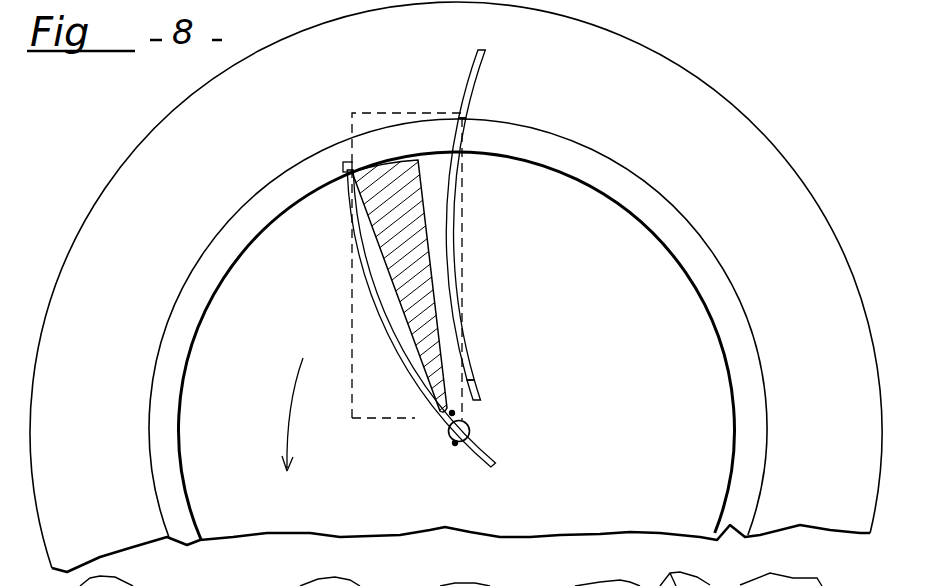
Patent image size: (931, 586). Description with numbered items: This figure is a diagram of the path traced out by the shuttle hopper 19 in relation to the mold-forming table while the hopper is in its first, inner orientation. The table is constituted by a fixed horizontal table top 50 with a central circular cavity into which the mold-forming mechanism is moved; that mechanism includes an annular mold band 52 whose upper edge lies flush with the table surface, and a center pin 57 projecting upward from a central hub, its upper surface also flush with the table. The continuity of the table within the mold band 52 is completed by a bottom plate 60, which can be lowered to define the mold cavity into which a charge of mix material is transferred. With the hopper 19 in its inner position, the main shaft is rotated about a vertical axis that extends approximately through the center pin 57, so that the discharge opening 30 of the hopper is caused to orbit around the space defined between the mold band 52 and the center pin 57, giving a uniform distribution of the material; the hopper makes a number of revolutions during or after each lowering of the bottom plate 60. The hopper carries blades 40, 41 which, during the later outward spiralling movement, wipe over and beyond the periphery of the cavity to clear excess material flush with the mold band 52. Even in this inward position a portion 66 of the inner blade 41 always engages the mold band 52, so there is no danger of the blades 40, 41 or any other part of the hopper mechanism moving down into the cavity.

The shuttle hopper 19 is at (466, 240).
The discharge opening 30 is at (421, 240).
The blade 40 is at (375, 306).
The inner blade 41 is at (471, 380).
The table top 50 is at (824, 294).
The mold band 52 is at (181, 470).
The center pin 57 is at (470, 438).
The bottom plate 60 is at (658, 278).
The portion of the inner blade 66 is at (477, 78).